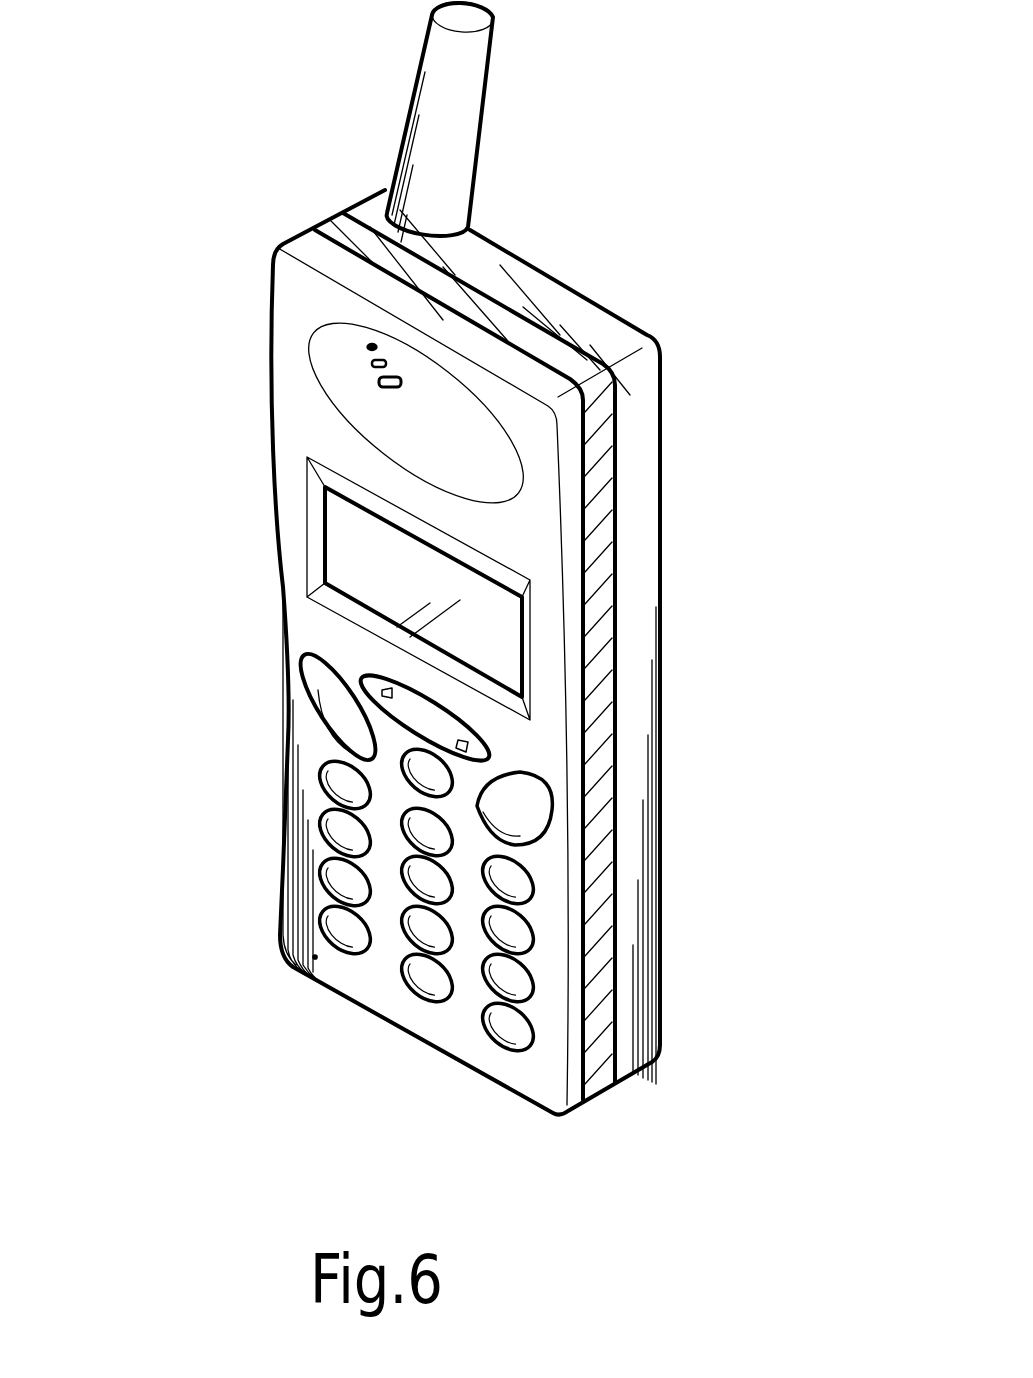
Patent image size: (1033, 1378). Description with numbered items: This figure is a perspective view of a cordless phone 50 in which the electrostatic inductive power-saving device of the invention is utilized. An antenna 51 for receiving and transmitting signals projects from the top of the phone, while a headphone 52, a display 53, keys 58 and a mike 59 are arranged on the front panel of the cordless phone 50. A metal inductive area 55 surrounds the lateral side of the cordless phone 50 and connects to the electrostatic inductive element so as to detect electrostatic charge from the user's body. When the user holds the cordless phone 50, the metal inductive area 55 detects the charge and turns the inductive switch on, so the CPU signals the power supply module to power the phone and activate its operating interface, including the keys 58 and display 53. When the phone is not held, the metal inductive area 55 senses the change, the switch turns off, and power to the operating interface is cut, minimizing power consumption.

The cordless phone 50 is at (180, 164).
The antenna 51 is at (463, 78).
The headphone 52 is at (375, 342).
The display 53 is at (355, 540).
The metal inductive area 55 is at (600, 468).
The keys 58 is at (342, 712).
The mike 59 is at (300, 940).